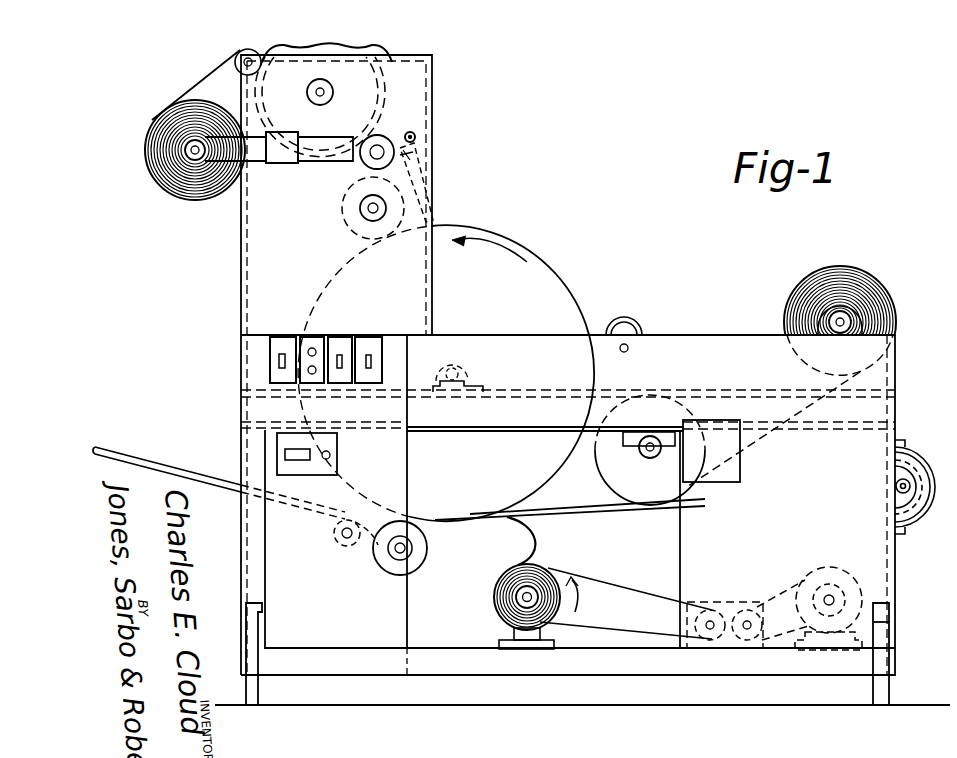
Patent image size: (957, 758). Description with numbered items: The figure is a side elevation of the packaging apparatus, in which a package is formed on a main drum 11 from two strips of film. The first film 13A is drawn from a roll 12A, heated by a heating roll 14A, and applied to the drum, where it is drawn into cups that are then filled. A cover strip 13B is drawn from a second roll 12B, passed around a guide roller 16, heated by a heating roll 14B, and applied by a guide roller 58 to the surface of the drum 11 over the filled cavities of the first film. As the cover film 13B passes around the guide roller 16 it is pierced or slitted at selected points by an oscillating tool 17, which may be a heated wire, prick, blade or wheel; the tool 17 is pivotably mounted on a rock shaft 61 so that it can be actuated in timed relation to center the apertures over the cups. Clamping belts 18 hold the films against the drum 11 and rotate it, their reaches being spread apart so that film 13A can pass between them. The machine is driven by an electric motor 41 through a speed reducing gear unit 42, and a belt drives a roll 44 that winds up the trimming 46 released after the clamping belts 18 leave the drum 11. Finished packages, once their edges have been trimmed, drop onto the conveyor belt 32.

The main drum 11 is at (543, 273).
The roll 12A is at (878, 293).
The roll 12B is at (148, 152).
The first film strip 13A is at (767, 441).
The cover strip 13B is at (238, 56).
The heating roll 14A is at (622, 487).
The heating roll 14B is at (316, 135).
The guide roller 16 is at (407, 112).
The tool 17 is at (415, 133).
The rock shaft 61 is at (416, 136).
The guide roller 58 is at (349, 222).
The clamping belts 18 is at (590, 513).
The conveyor belt 32 is at (160, 462).
The trimming 46 is at (519, 541).
The roll 44 is at (498, 598).
The speed reducing gear unit 42 is at (714, 604).
The electric motor 41 is at (818, 577).